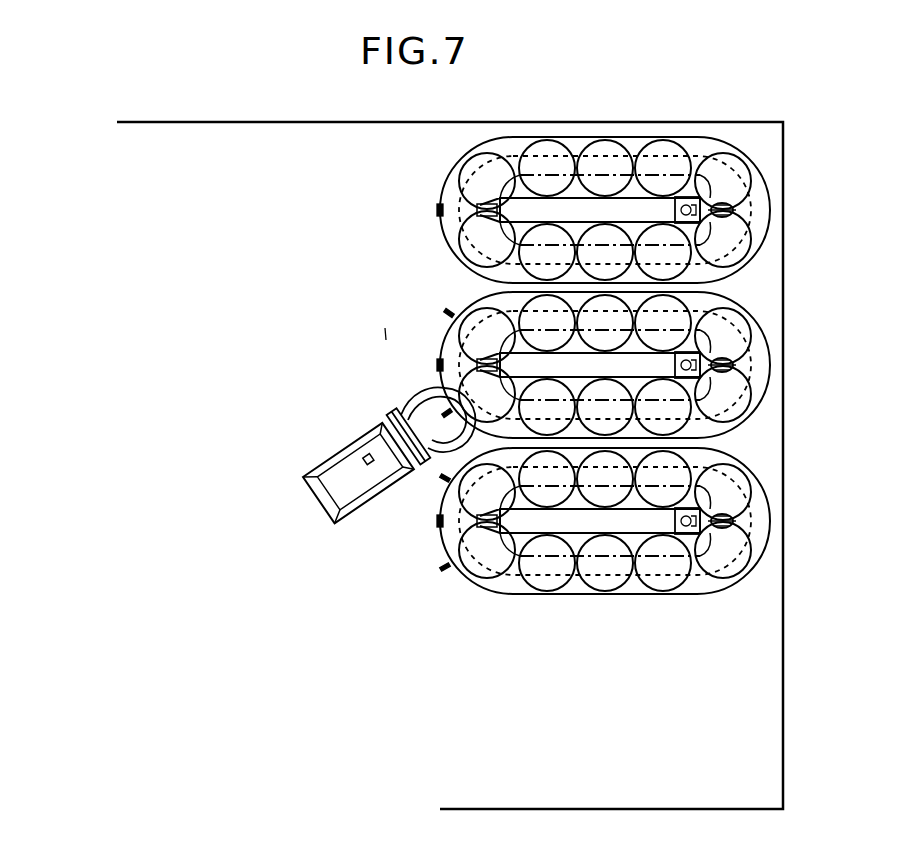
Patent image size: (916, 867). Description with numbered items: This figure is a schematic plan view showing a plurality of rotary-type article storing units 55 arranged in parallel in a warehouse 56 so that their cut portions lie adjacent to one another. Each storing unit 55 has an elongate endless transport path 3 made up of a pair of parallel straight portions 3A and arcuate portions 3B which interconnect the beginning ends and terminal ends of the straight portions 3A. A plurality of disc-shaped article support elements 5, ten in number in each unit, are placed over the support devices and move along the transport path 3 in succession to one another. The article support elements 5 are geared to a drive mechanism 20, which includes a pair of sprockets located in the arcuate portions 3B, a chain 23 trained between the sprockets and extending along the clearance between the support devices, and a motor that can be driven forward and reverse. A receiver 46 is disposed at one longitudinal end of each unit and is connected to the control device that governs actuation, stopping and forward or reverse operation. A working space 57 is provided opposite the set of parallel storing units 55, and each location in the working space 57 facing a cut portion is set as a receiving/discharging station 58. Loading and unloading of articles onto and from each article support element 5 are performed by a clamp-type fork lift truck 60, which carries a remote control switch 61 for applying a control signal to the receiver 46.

The transport path 3 is at (552, 565).
The straight portions 3A is at (700, 480).
The arcuate portions 3B is at (737, 524).
The article support elements 5 is at (603, 160).
The drive mechanism 20 is at (708, 204).
The chain 23 is at (680, 197).
The receiver 46 is at (440, 210).
The article storing units 55 is at (774, 188).
The warehouse 56 is at (238, 450).
The working space 57 is at (385, 333).
The receiving/discharging station 58 is at (450, 311).
The clamp-type fork lift truck 60 is at (323, 500).
The remote control switch 61 is at (368, 456).